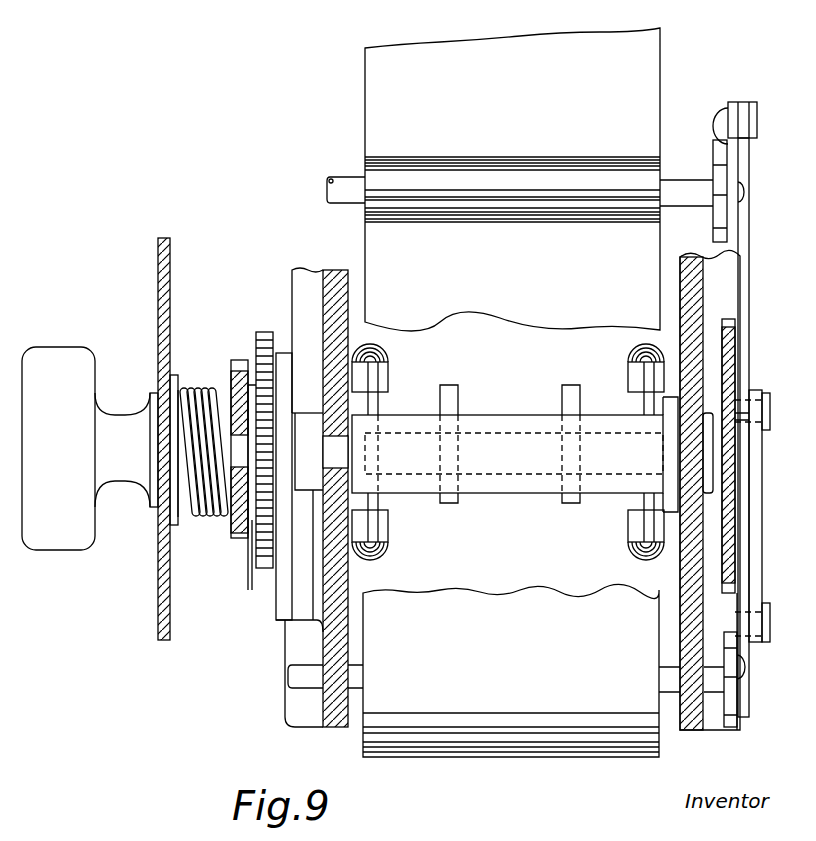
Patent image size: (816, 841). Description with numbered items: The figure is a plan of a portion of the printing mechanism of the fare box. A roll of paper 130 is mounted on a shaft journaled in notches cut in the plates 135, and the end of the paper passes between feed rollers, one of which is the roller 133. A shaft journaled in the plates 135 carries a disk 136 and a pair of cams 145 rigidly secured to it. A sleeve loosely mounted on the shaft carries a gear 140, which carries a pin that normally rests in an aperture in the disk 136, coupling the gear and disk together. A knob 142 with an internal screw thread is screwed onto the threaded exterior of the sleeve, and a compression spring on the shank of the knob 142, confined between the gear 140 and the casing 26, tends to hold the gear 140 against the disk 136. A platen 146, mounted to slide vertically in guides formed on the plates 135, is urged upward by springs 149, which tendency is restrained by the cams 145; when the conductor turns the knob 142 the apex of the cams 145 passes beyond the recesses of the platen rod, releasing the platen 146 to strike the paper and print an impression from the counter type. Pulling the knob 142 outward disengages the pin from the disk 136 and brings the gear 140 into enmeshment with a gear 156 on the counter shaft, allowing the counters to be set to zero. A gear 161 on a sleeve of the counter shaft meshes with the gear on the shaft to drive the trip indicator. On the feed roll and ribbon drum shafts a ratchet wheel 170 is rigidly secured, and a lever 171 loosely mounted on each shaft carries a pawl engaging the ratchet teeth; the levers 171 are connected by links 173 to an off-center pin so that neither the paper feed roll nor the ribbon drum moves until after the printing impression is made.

The casing 26 is at (158, 262).
The roll of paper 130 is at (550, 750).
The roller 133 is at (642, 182).
The plates 135 is at (680, 627).
The disk 136 is at (285, 368).
The gear 140 is at (265, 335).
The knob 142 is at (47, 362).
The cams 145 is at (562, 401).
The platen 146 is at (472, 483).
The springs 149 is at (628, 350).
The gear 156 is at (231, 375).
The gear 161 is at (717, 565).
The ratchet wheel 170 is at (722, 130).
The lever 171 is at (728, 155).
The links 173 is at (757, 390).